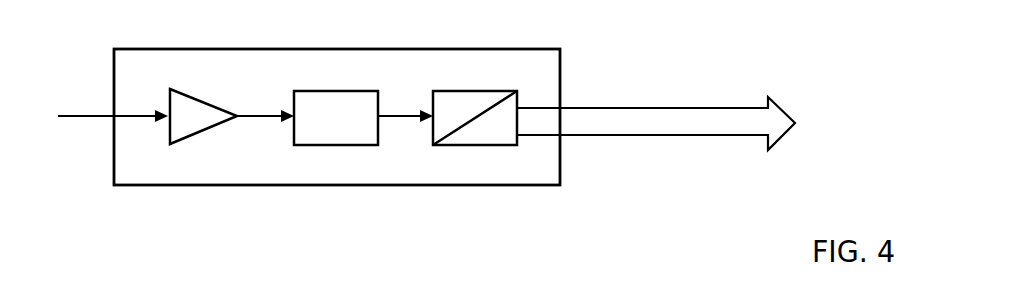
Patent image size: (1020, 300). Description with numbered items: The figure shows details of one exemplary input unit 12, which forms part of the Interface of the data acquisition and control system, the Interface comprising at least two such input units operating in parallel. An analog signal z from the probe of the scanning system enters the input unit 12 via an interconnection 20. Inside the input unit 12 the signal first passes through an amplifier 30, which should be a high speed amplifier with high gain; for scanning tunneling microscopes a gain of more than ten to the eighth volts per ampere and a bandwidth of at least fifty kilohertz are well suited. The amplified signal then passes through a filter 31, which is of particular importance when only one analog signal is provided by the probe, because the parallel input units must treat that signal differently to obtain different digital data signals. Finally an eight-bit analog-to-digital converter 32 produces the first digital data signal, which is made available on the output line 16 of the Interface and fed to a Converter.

The input unit 12 is at (513, 63).
The interconnection 20 is at (97, 114).
The amplifier 30 is at (202, 122).
The filter 31 is at (313, 127).
The analog-to-digital converter 32 is at (475, 133).
The output line 16 is at (735, 135).